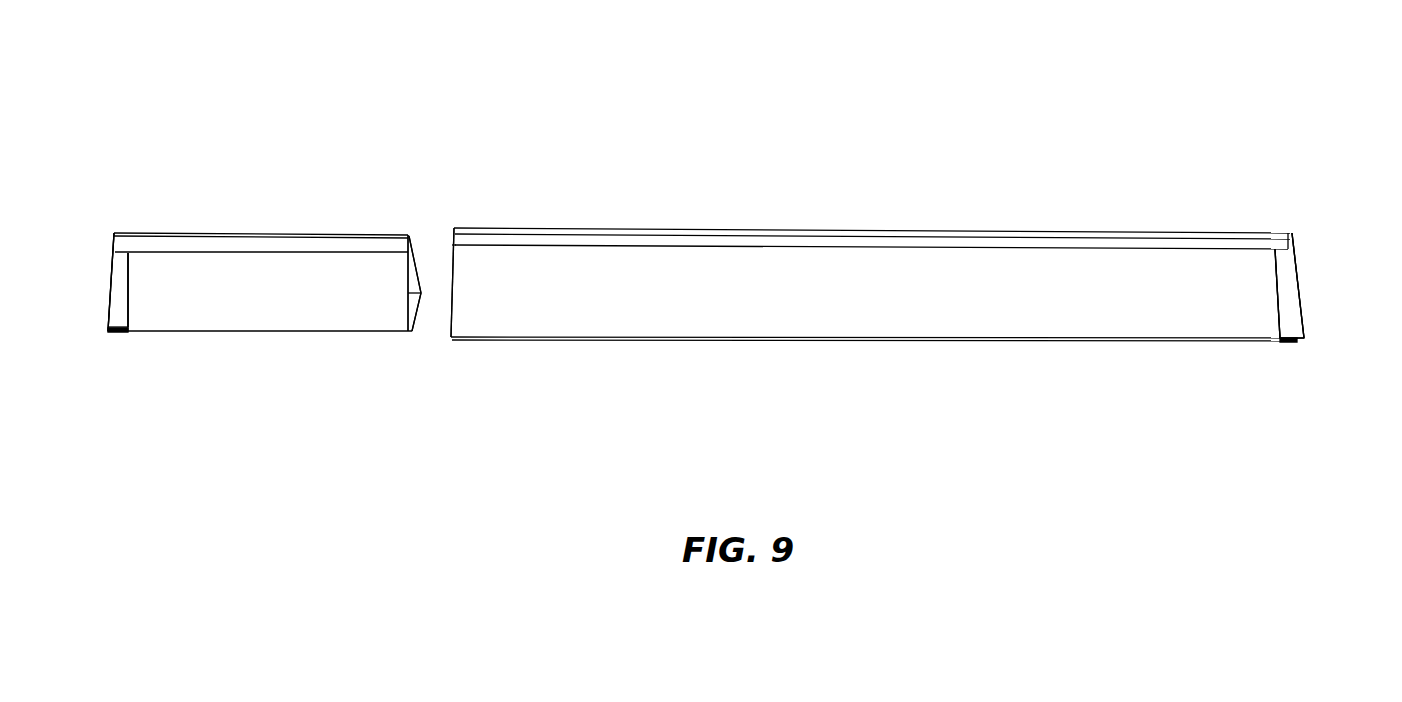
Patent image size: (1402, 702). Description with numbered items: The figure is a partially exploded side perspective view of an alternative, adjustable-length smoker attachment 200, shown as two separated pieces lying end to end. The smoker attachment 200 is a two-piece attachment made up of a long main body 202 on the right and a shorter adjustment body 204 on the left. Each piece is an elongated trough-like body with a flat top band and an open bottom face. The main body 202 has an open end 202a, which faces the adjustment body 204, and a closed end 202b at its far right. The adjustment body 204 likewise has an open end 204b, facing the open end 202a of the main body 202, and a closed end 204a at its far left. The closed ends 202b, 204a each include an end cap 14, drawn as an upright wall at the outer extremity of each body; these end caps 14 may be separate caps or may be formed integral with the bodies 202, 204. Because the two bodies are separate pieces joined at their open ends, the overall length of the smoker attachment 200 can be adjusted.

The smoker attachment 200 is at (812, 98).
The main body 202 is at (875, 300).
The open end 202a is at (488, 297).
The closed end 202b is at (1242, 312).
The adjustment body 204 is at (267, 297).
The closed end 204a is at (155, 295).
The open end 204b is at (390, 295).
The end cap 14 is at (110, 276).